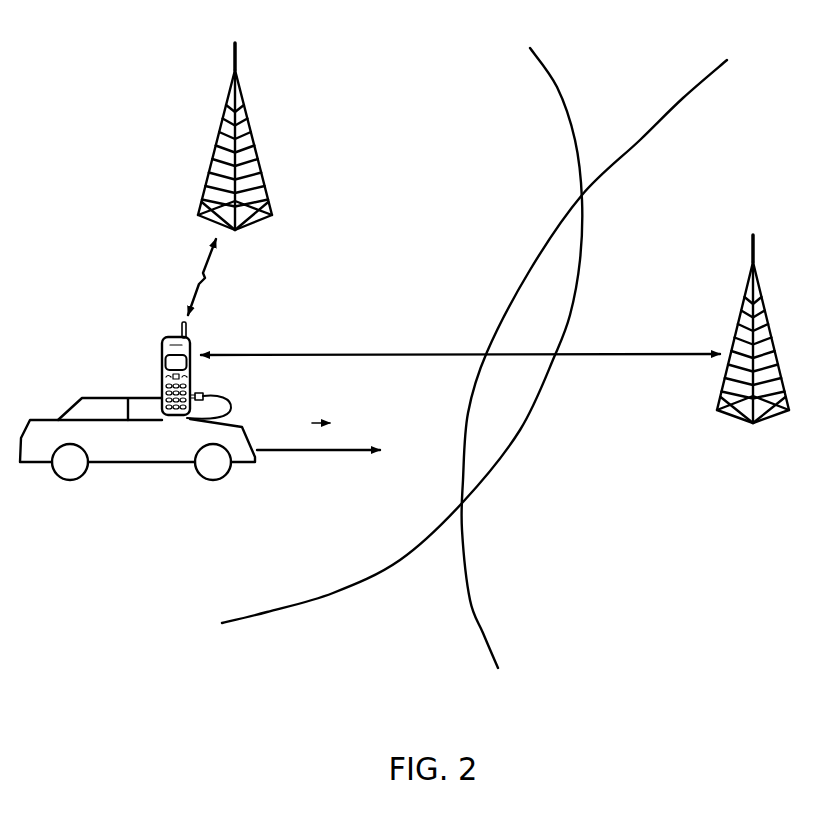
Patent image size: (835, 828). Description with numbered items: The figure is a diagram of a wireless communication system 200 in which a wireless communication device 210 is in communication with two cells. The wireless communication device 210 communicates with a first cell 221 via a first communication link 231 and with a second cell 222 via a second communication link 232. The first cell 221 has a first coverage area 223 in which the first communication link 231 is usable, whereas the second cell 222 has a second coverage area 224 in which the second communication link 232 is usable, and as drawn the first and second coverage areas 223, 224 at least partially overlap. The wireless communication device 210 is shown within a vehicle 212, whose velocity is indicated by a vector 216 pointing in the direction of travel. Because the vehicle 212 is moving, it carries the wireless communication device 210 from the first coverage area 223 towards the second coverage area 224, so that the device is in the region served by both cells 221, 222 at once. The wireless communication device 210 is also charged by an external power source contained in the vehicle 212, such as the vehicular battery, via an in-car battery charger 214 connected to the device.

The wireless communication system 200 is at (106, 75).
The wireless communication device 210 is at (161, 344).
The vehicle 212 is at (80, 397).
The in-car battery charger 214 is at (227, 398).
The vector 216 is at (295, 452).
The first cell 221 is at (253, 114).
The second cell 222 is at (767, 305).
The first coverage area 223 is at (557, 88).
The second coverage area 224 is at (684, 99).
The first communication link 231 is at (206, 282).
The second communication link 232 is at (660, 352).